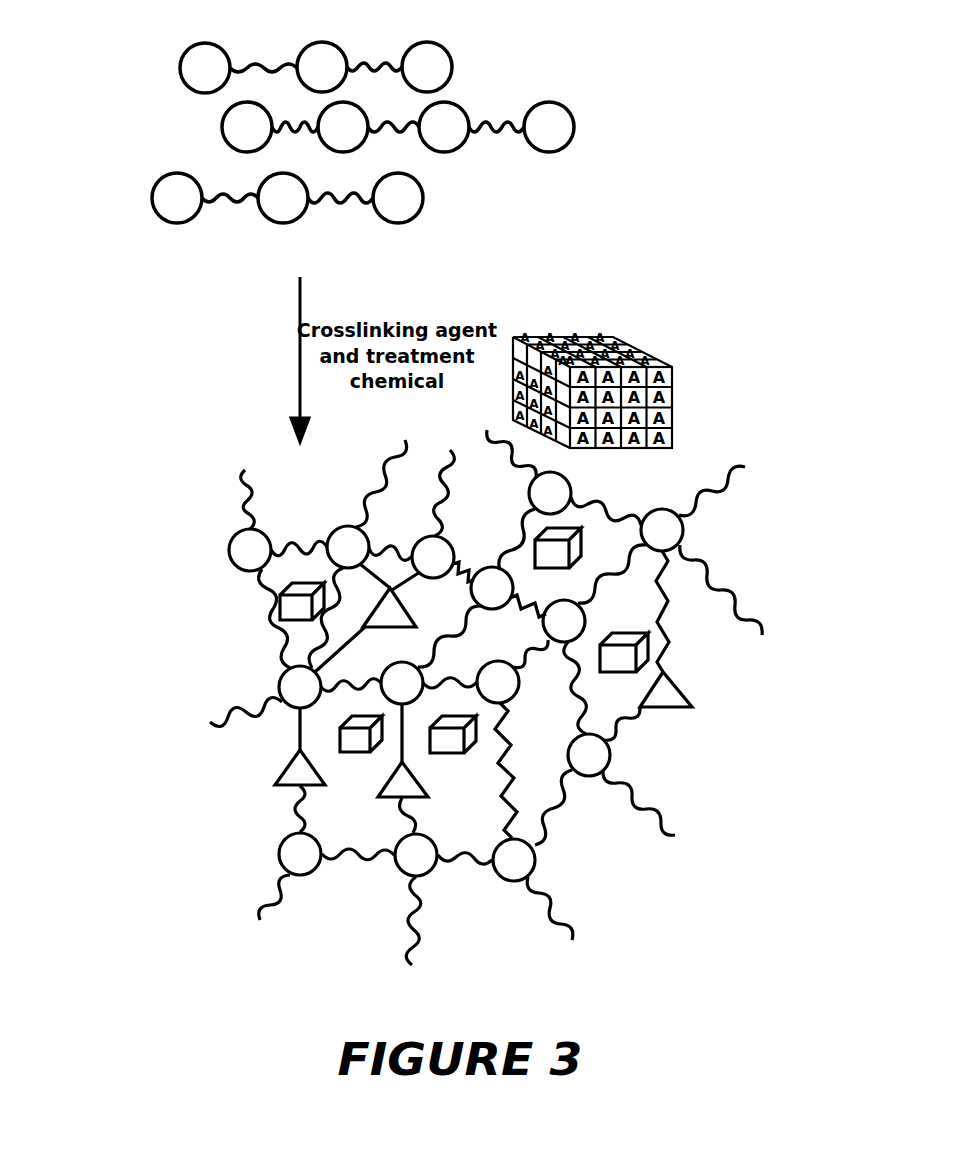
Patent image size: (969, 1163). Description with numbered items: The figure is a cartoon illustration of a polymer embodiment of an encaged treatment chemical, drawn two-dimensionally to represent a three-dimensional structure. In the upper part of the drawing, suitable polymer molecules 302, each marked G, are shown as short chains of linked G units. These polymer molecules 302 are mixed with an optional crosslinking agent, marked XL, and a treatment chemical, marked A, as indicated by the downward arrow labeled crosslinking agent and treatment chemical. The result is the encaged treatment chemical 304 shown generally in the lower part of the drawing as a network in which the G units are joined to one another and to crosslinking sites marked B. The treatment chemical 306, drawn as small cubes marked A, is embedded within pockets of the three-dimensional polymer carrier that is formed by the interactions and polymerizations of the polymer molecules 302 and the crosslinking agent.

The polymer molecules 302 is at (147, 175).
The encaged treatment chemical 304 is at (225, 644).
The treatment chemical 306 is at (283, 617).